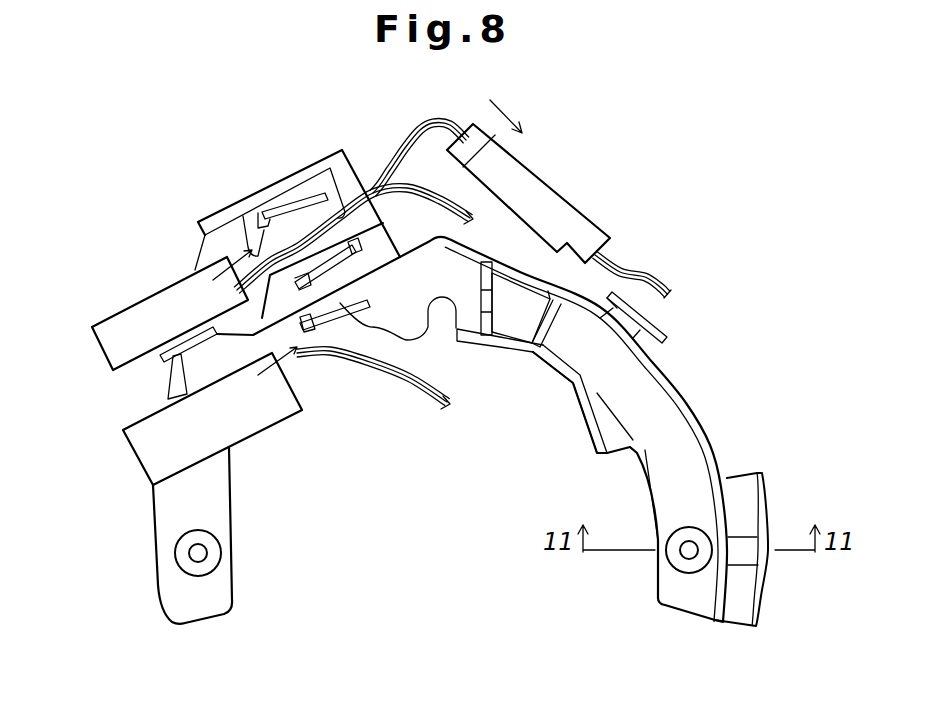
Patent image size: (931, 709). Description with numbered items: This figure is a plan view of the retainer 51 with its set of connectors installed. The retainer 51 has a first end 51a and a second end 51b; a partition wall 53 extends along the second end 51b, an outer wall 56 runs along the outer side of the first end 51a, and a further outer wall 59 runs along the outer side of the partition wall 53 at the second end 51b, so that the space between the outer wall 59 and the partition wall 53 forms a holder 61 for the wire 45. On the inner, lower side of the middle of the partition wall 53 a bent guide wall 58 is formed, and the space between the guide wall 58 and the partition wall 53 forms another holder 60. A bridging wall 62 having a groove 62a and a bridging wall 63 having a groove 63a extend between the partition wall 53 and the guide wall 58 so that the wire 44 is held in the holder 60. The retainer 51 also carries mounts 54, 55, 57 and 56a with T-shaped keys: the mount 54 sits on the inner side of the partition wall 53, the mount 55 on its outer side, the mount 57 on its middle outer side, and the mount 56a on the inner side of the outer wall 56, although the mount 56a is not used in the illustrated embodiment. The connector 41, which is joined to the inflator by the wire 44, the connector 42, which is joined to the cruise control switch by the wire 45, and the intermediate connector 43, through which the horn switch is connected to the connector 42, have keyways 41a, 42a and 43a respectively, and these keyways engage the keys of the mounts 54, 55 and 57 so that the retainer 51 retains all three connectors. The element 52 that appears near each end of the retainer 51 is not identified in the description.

The connector 41 is at (266, 430).
The keyway 41a is at (170, 378).
The connector 42 is at (131, 307).
The keyway 42a is at (212, 330).
The intermediate connector 43 is at (541, 178).
The keyway 43a is at (506, 200).
The wire 44 is at (410, 384).
The wire 45 is at (408, 185).
The retainer 51 is at (744, 410).
The first end 51a is at (232, 582).
The second end 51b is at (657, 540).
The mounting hole 52 is at (175, 562).
The partition wall 53 is at (713, 438).
The mount 54 is at (352, 312).
The mount 55 is at (355, 240).
The outer wall 56 is at (257, 192).
The mount 56a is at (312, 197).
The mount 57 is at (656, 325).
The bent guide wall 58 is at (476, 346).
The outer wall 59 is at (767, 496).
The holder 60 is at (668, 428).
The holder 61 is at (744, 551).
The bridging wall 62 is at (497, 325).
The groove 62a is at (482, 292).
The bridging wall 63 is at (556, 318).
The groove 63a is at (535, 352).